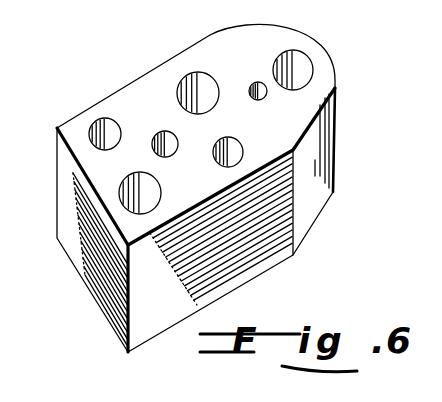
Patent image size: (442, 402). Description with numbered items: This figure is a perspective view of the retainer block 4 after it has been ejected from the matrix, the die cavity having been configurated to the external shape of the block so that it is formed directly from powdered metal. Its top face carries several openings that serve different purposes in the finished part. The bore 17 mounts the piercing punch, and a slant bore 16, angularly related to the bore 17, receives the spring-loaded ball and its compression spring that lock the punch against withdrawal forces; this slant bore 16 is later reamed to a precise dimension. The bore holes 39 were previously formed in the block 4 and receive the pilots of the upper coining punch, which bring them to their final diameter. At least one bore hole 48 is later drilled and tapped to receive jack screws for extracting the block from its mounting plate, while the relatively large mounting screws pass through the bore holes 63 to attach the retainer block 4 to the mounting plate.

The retainer block 4 is at (320, 145).
The slant bore 16 is at (254, 83).
The bore 17 is at (299, 68).
The bore holes 39 is at (94, 128).
The bore hole 48 is at (167, 135).
The bore holes 63 is at (195, 82).